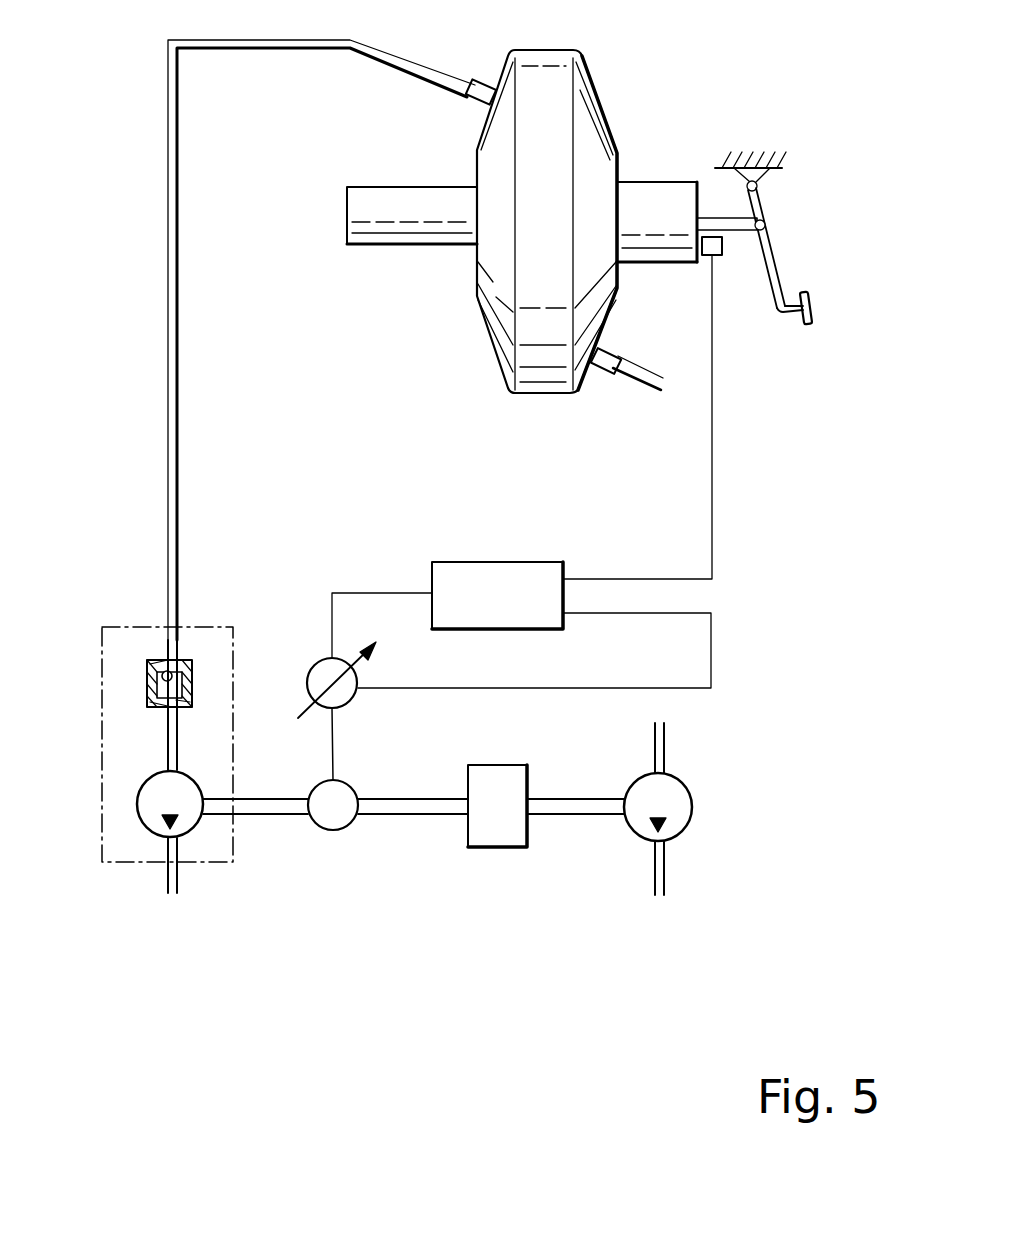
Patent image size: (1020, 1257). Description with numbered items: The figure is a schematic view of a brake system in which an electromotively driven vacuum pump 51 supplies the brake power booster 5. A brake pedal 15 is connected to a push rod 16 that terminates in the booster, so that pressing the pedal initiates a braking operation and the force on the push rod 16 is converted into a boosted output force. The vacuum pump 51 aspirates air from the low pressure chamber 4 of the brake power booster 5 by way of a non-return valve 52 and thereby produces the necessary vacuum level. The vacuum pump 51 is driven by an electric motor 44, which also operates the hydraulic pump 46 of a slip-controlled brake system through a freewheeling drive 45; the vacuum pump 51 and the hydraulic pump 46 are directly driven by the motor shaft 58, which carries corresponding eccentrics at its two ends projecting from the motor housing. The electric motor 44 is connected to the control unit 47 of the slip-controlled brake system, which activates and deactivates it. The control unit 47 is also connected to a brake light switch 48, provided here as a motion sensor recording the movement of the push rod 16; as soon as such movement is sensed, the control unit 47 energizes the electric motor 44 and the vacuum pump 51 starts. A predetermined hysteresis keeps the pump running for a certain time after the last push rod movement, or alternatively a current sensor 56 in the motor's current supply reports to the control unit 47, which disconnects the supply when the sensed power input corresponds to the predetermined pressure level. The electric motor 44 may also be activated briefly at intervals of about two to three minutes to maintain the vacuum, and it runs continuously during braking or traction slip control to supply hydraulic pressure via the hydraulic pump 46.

The brake power booster 5 is at (594, 82).
The low pressure chamber 4 is at (487, 173).
The push rod 16 is at (735, 220).
The brake pedal 15 is at (812, 300).
The brake light switch 48 is at (722, 247).
The control unit 47 is at (497, 572).
The current sensor 56 is at (310, 684).
The non-return valve 52 is at (150, 683).
The vacuum pump 51 is at (148, 803).
The motor shaft 58 is at (272, 806).
The electric motor 44 is at (333, 830).
The freewheeling drive 45 is at (500, 838).
The hydraulic pump 46 is at (683, 812).